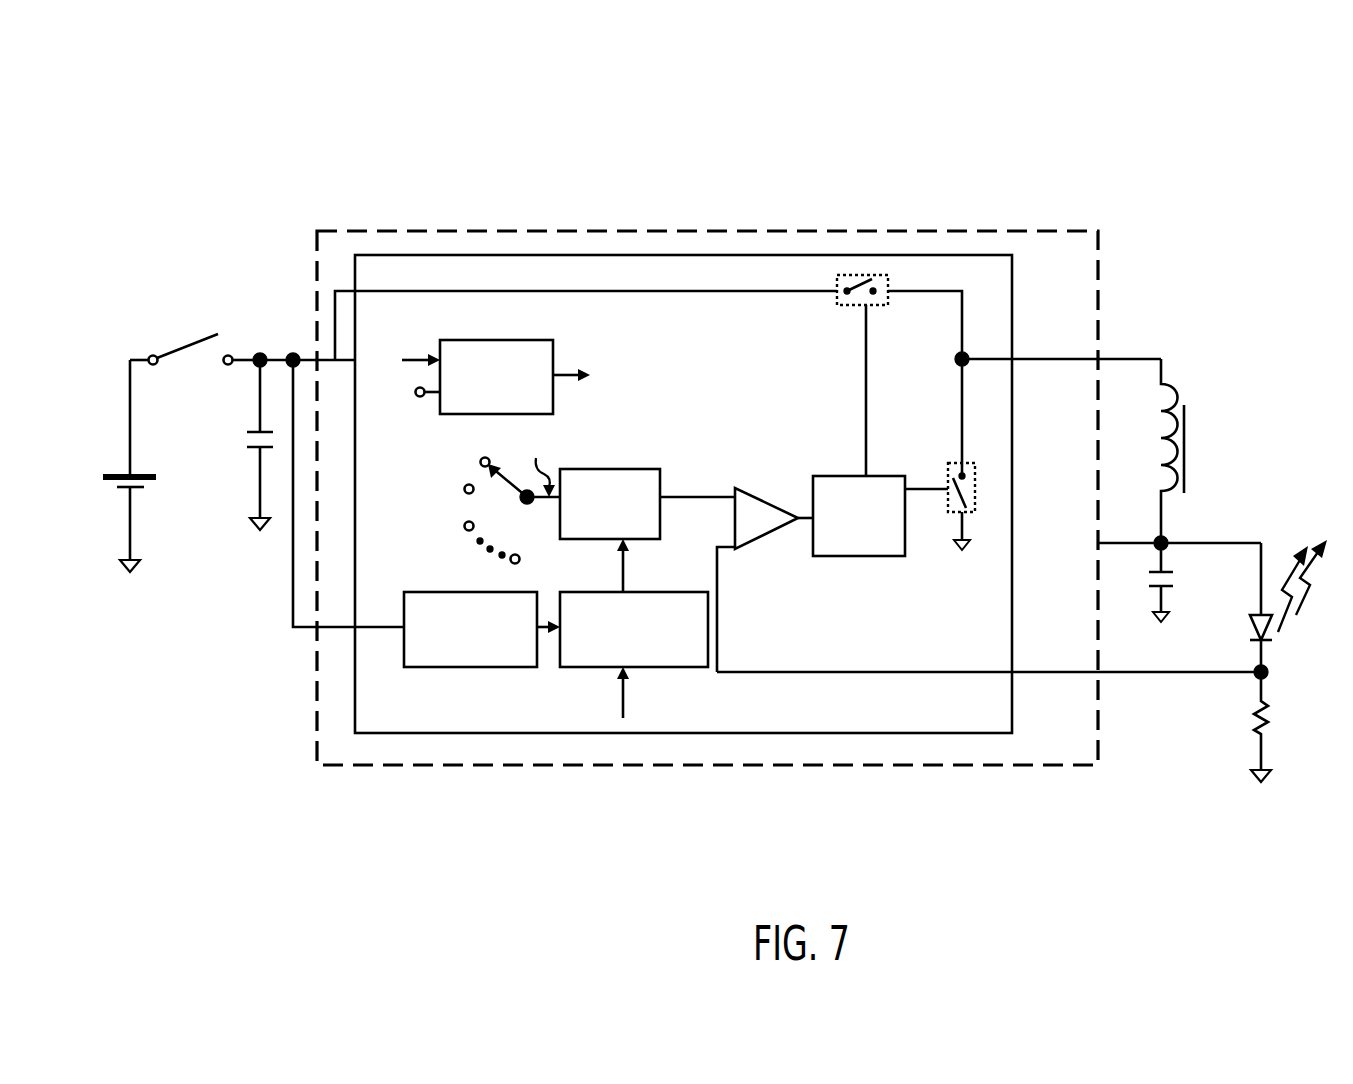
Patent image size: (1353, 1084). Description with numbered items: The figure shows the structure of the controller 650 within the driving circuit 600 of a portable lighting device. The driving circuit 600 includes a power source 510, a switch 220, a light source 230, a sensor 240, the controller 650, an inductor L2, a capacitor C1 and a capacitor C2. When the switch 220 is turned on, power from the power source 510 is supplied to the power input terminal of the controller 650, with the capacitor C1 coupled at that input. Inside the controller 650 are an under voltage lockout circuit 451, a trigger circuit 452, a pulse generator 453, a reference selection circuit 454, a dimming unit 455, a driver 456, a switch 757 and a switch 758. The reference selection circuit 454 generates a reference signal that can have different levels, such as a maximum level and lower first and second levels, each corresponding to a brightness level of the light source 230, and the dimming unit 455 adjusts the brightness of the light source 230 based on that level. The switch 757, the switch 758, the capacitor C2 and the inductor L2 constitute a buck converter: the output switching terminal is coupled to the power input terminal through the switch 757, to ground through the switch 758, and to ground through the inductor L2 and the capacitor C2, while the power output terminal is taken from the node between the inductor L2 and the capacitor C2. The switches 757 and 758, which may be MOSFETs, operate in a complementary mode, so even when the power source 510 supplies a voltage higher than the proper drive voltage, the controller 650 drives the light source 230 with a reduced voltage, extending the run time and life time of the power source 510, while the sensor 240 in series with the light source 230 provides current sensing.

The driving circuit 600 is at (240, 136).
The switch 220 is at (186, 347).
The power source 510 is at (128, 472).
The capacitor C1 is at (251, 450).
The controller 650 is at (661, 776).
The under voltage lockout (UVLO) circuit 451 is at (541, 339).
The trigger circuit 452 is at (478, 591).
The pulse generator 453 is at (672, 591).
The reference selection circuit 454 is at (653, 468).
The dimming unit 455 is at (748, 490).
The driver 456 is at (893, 557).
The switch 757 is at (858, 306).
The switch 758 is at (977, 478).
The inductor L2 is at (1186, 458).
The capacitor C2 is at (1156, 590).
The light source 230 is at (1257, 614).
The sensor 240 is at (1258, 736).